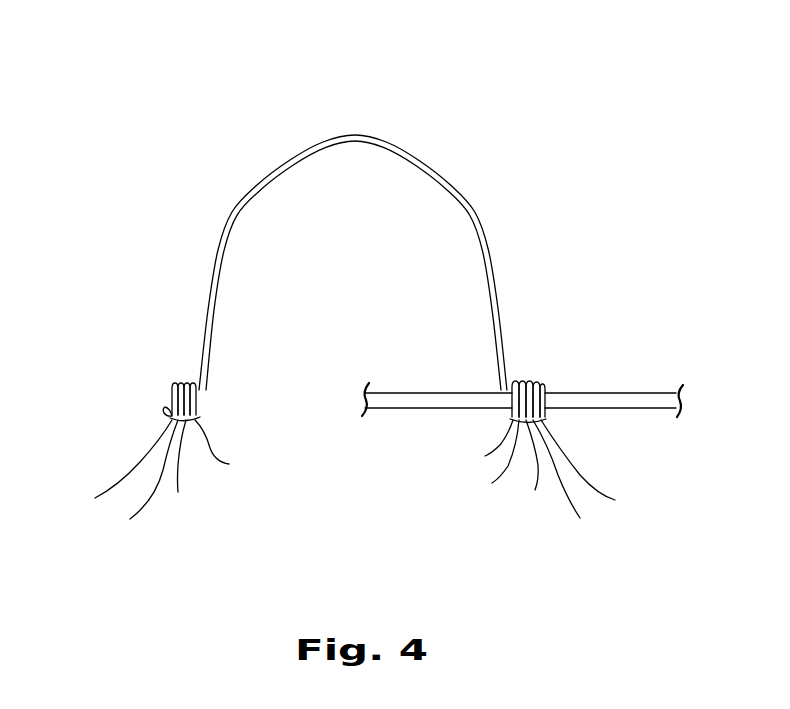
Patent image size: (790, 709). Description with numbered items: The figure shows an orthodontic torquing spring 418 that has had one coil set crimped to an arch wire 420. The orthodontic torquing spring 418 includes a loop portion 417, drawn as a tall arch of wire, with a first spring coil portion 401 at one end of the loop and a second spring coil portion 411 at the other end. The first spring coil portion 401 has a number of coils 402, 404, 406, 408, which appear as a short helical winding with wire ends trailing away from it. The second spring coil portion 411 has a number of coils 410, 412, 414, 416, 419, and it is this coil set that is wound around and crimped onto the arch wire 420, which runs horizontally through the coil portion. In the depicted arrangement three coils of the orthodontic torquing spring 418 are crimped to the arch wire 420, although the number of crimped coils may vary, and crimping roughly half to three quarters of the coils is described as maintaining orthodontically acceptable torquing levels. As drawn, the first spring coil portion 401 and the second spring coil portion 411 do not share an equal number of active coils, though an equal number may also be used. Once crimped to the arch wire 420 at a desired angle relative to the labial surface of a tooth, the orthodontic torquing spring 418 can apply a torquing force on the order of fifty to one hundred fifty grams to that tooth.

The first spring coil portion 401 is at (180, 360).
The coil 402 is at (114, 469).
The coil 404 is at (143, 485).
The coil 406 is at (180, 474).
The coil 408 is at (230, 449).
The coil 410 is at (478, 448).
The second spring coil portion 411 is at (537, 362).
The coil 412 is at (485, 463).
The coil 414 is at (535, 472).
The coil 416 is at (567, 485).
The loop portion 417 is at (324, 137).
The orthodontic torquing spring 418 is at (207, 90).
The coil 419 is at (597, 471).
The arch wire 420 is at (620, 400).